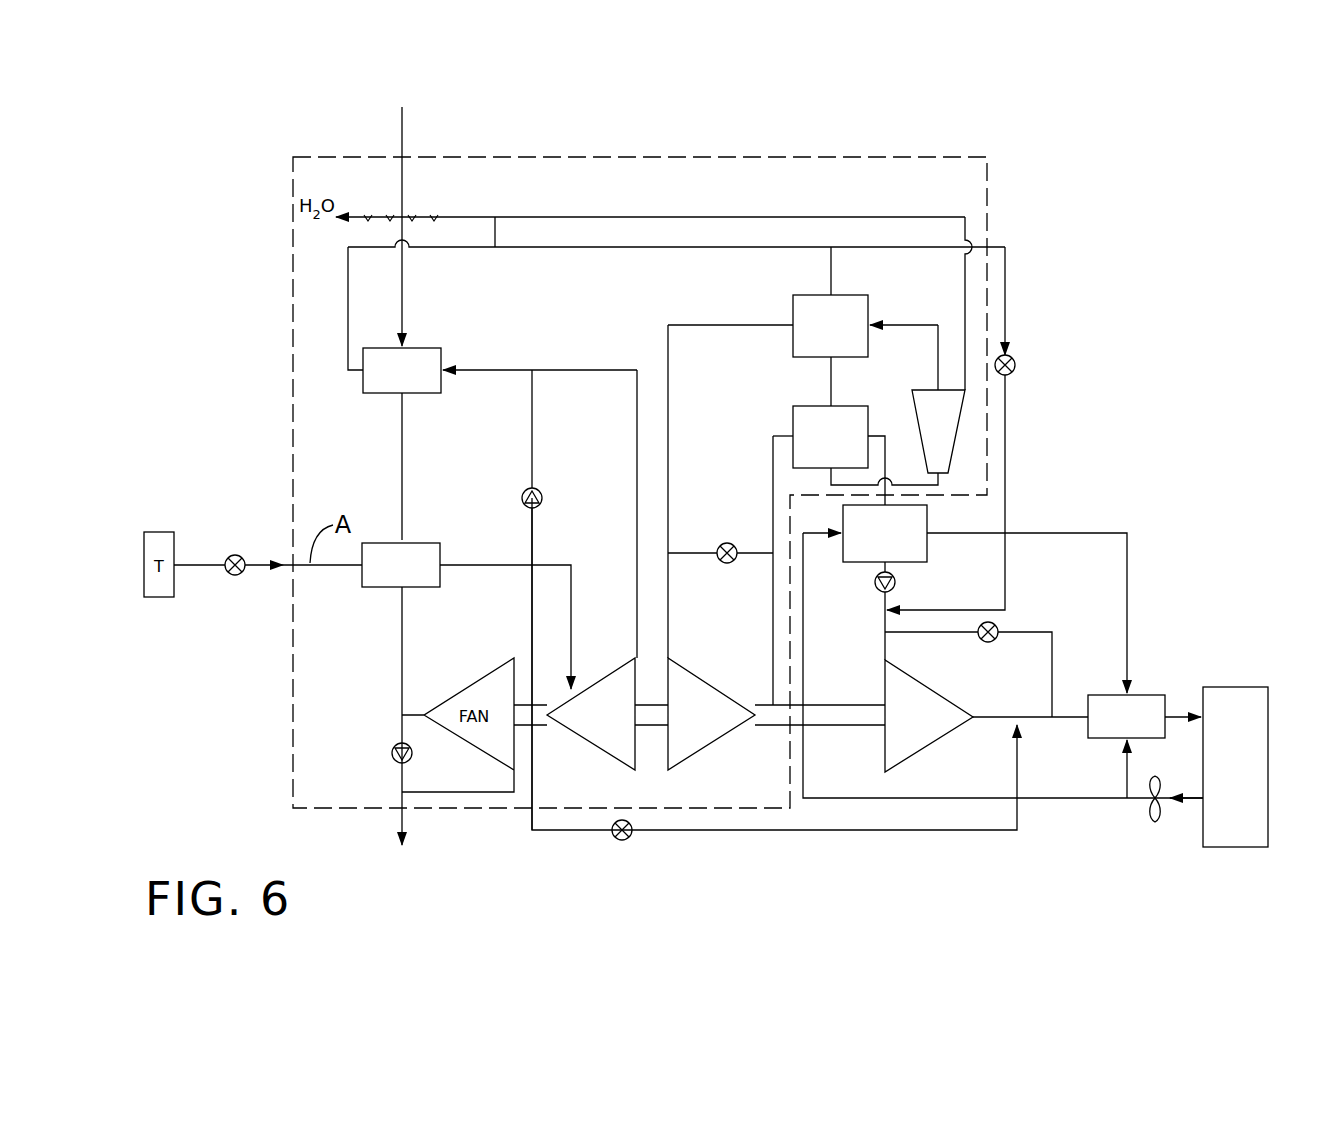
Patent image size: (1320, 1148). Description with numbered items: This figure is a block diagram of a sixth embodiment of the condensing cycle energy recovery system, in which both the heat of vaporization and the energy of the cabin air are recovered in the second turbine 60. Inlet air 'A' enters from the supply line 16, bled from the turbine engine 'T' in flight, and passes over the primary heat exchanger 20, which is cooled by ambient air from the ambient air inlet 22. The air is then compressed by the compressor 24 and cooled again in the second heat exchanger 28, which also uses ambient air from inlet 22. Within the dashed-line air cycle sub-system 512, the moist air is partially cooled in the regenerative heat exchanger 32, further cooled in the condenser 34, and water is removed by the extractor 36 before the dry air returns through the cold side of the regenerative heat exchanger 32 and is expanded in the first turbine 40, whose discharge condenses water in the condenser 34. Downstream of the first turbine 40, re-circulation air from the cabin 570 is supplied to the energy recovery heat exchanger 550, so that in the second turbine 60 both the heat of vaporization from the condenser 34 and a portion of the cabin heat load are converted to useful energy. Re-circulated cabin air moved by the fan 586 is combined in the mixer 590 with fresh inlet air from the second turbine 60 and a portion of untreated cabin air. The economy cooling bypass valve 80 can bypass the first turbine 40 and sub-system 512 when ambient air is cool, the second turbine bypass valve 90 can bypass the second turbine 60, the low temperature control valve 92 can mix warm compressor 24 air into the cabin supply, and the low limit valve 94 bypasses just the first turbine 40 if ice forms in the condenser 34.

The supply line 16 is at (197, 562).
The primary heat exchanger 20 is at (380, 588).
The ambient air inlet 22 is at (405, 135).
The compressor 24 is at (617, 763).
The second heat exchanger 28 is at (385, 393).
The regenerative heat exchanger 32 is at (808, 295).
The condenser 34 is at (805, 406).
The extractor 36 is at (912, 410).
The first turbine 40 is at (690, 763).
The second turbine 60 is at (905, 765).
The economy cooling bypass valve 80 is at (1020, 365).
The second turbine bypass valve 90 is at (983, 645).
The low temperature control valve 92 is at (617, 843).
The low limit valve 94 is at (730, 540).
The air cycle sub-system 512 is at (788, 155).
The energy recovery heat exchanger 550 is at (908, 562).
The cabin 570 is at (1219, 767).
The fan 586 is at (1150, 820).
The mixer 590 is at (1150, 695).